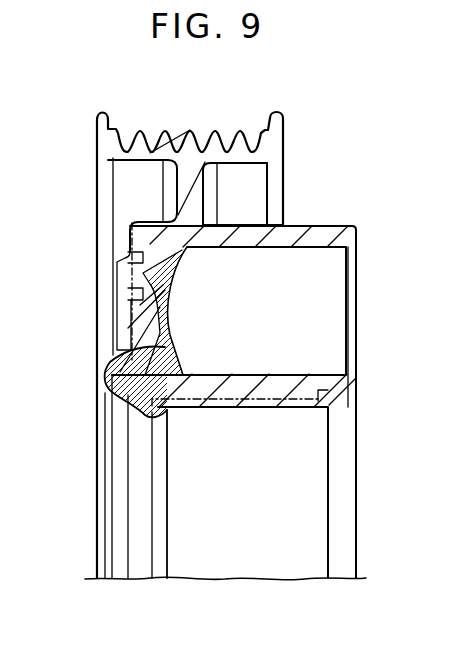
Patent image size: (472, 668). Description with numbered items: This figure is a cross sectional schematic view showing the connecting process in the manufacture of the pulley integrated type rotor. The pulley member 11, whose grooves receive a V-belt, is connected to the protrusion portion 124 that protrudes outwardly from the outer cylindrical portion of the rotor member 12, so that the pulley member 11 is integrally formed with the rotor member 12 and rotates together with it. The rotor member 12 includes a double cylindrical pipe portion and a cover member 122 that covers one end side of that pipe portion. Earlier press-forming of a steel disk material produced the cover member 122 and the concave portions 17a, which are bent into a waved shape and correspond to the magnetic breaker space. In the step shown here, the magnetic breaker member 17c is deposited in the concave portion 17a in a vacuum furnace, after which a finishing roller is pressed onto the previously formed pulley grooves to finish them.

The pulley member 11 is at (97, 132).
The protrusion portion 124 is at (205, 196).
The rotor member 12 is at (357, 299).
The concave portion 17a is at (143, 273).
The magnetic breaker member 17c is at (114, 372).
The cover member 122 is at (128, 509).